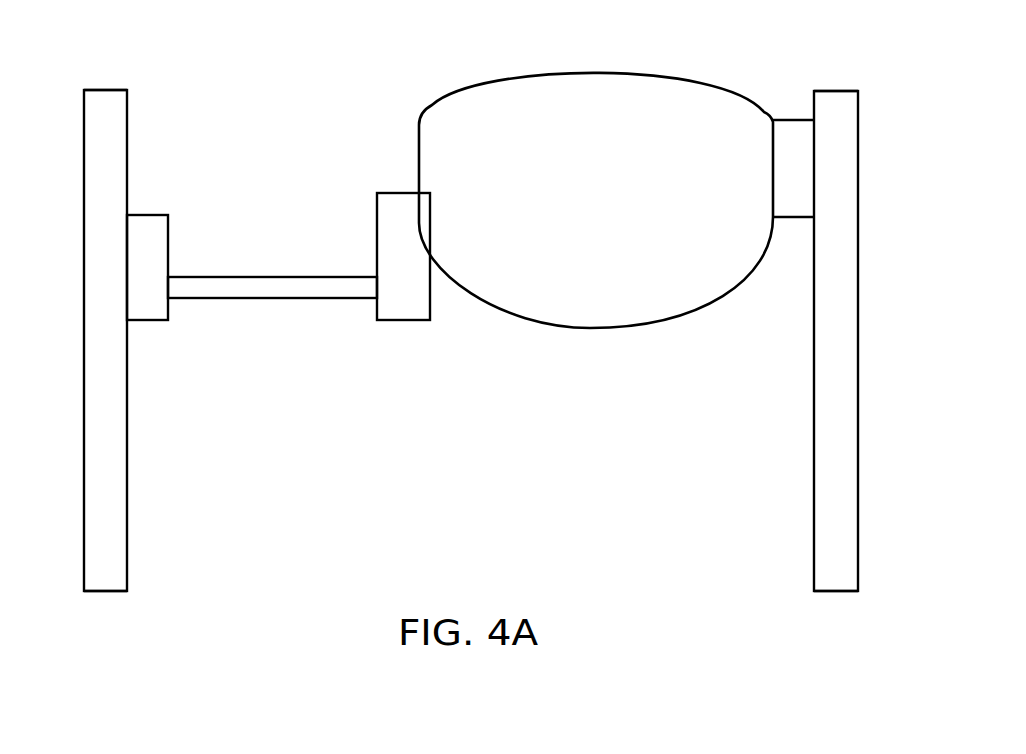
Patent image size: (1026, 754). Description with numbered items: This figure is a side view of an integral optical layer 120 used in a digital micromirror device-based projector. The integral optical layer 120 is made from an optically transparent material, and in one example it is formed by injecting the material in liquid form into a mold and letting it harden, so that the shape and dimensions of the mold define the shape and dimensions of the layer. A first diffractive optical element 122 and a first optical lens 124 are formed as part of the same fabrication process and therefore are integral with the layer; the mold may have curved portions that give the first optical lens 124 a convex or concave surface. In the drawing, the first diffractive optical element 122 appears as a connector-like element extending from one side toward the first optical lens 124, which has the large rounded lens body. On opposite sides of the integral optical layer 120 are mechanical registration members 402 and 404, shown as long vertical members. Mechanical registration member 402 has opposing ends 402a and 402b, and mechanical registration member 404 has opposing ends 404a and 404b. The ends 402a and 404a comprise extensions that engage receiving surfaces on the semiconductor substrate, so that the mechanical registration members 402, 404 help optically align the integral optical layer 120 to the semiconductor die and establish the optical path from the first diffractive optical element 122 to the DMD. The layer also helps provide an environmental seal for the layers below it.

The integral optical layer 120 is at (217, 60).
The first diffractive optical element 122 is at (270, 277).
The first optical lens 124 is at (593, 73).
The mechanical registration member 402 is at (84, 340).
The end of mechanical registration member 402a is at (105, 592).
The end of mechanical registration member 402b is at (107, 89).
The mechanical registration member 404 is at (858, 340).
The end of mechanical registration member 404a is at (836, 592).
The end of mechanical registration member 404b is at (835, 90).